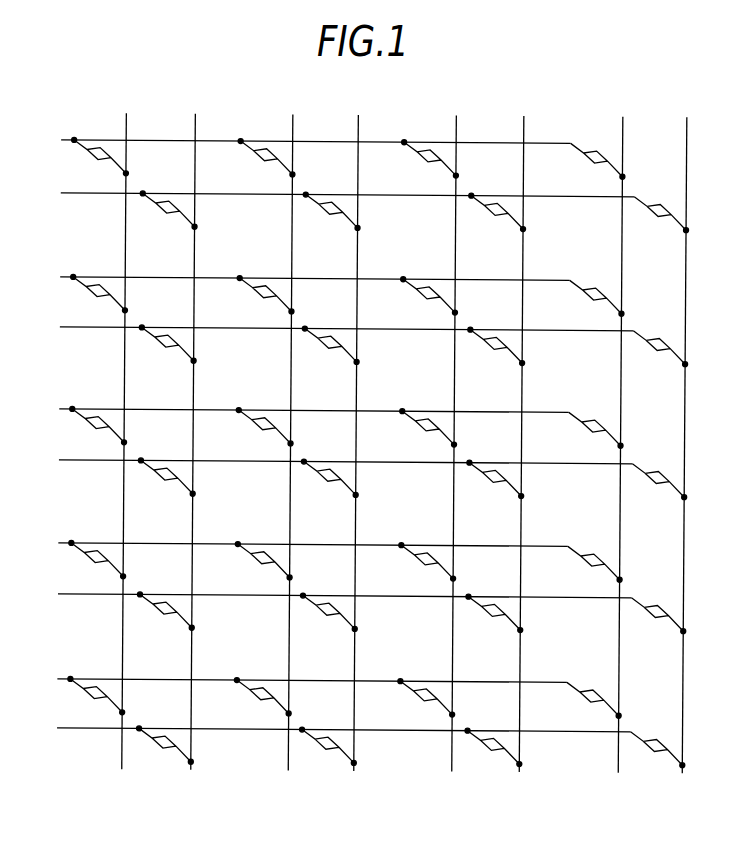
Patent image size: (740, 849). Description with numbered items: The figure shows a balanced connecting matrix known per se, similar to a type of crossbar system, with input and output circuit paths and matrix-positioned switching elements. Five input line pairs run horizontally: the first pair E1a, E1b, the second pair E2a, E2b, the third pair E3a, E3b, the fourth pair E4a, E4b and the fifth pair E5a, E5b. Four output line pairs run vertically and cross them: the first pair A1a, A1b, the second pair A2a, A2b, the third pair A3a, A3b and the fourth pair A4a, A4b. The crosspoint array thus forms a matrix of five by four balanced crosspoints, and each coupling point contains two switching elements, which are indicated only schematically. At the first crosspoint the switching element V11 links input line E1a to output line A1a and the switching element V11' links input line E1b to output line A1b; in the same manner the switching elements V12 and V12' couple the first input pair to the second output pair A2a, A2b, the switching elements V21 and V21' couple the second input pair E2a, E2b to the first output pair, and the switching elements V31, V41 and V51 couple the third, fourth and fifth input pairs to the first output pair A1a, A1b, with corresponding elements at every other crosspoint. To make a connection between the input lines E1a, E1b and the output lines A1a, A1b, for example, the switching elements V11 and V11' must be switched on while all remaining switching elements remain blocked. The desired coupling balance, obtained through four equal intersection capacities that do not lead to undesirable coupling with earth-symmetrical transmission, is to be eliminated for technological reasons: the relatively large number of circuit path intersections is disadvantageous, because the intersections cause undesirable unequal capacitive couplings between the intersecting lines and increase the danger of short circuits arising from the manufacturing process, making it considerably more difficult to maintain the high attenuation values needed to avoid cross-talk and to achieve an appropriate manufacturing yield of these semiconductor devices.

The output line A1a is at (126, 423).
The output line A1b is at (195, 424).
The output line A2a is at (292, 424).
The output line A2b is at (358, 425).
The output line A3a is at (456, 425).
The output line A3b is at (523, 426).
The output line A4a is at (622, 427).
The output line A4b is at (686, 427).
The input line E1a is at (292, 143).
The input line E1b is at (324, 196).
The input line E2a is at (291, 280).
The input line E2b is at (323, 330).
The input line E3a is at (290, 412).
The input line E3b is at (322, 463).
The input line E4a is at (289, 545).
The input line E4b is at (321, 596).
The input line E5a is at (288, 681).
The input line E5b is at (320, 730).
The switching element V11 is at (99, 162).
The switching element V11' is at (168, 220).
The switching element V12 is at (266, 164).
The switching element V12' is at (331, 221).
The switching element V21 is at (98, 299).
The switching element V21' is at (167, 354).
The switching element V31 is at (97, 431).
The switching element V41 is at (97, 565).
The switching element V51 is at (96, 701).